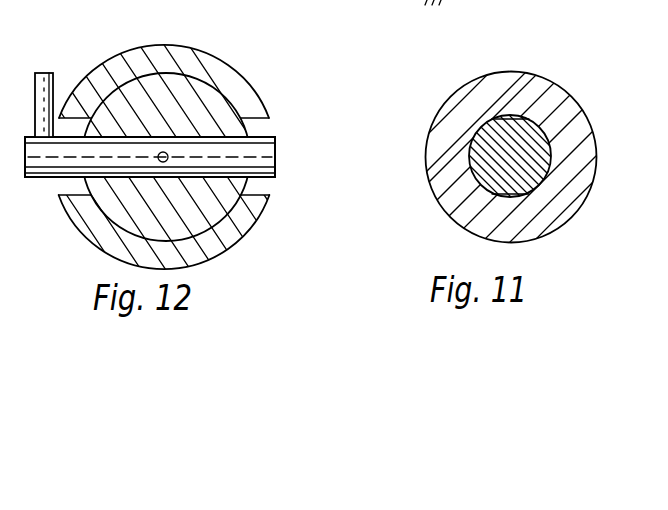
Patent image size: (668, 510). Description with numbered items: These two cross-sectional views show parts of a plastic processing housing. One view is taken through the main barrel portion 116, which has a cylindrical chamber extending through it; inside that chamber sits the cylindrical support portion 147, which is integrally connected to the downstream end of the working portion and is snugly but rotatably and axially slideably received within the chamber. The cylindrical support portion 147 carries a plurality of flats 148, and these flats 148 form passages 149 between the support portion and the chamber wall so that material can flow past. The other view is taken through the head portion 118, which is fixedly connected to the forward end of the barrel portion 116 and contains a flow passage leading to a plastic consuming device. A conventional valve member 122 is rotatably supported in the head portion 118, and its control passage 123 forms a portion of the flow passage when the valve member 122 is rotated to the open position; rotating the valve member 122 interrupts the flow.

In FIG. 12, the head portion 118 is at (217, 207).
In FIG. 12, the valve member 122 is at (253, 150).
In FIG. 12, the control passage 123 is at (167, 152).
In FIG. 11, the main barrel portion 116 is at (474, 108).
In FIG. 11, the cylindrical support portion 147 is at (533, 145).
In FIG. 11, the flats 148 is at (513, 115).
In FIG. 11, the passages 149 is at (510, 197).